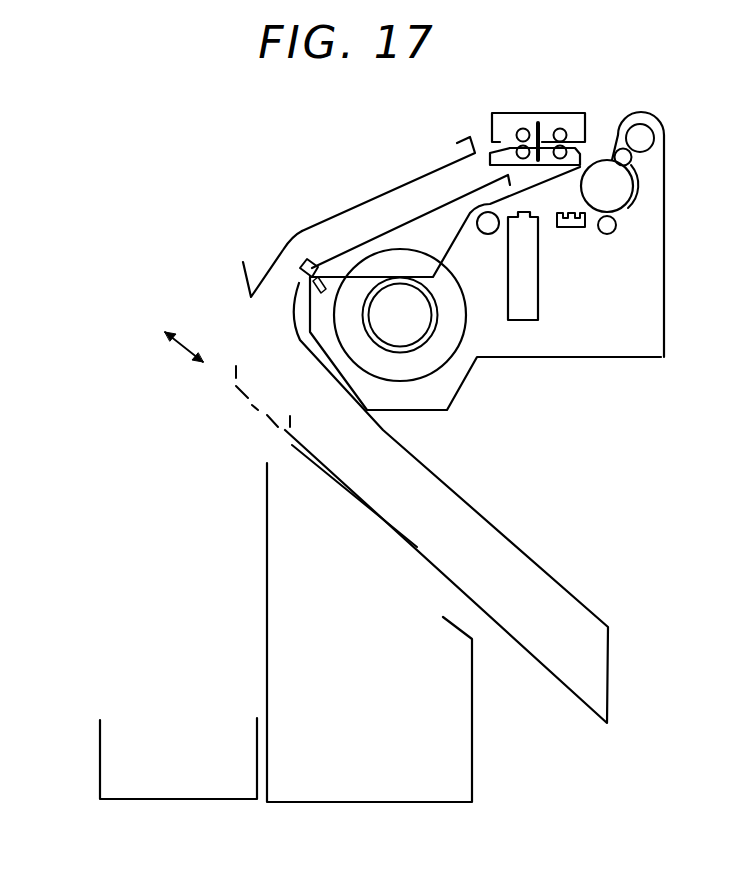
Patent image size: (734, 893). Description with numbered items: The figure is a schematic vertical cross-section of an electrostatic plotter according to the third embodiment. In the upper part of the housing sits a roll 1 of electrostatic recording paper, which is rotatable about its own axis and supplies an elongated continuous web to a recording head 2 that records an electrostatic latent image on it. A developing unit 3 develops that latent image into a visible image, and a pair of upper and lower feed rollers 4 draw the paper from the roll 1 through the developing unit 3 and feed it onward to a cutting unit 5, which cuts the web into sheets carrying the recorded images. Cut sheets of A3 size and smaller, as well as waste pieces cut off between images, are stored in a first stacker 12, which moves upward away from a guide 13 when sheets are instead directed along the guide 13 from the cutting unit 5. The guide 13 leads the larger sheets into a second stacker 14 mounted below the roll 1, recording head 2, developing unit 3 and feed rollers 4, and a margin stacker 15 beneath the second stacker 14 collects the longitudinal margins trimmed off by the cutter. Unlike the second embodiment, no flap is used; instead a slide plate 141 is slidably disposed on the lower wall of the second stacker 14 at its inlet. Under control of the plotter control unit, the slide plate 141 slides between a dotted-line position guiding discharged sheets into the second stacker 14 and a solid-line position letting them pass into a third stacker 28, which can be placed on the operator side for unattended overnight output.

The roll 1 is at (427, 368).
The recording head 2 is at (522, 321).
The developing unit 3 is at (574, 228).
The feed rollers 4 is at (627, 217).
The cutting unit 5 is at (512, 112).
The first stacker 12 is at (242, 268).
The guide 13 is at (400, 216).
The second stacker 14 is at (571, 594).
The margin stacker 15 is at (470, 732).
The third stacker 28 is at (98, 742).
The slide plate 141 is at (253, 407).